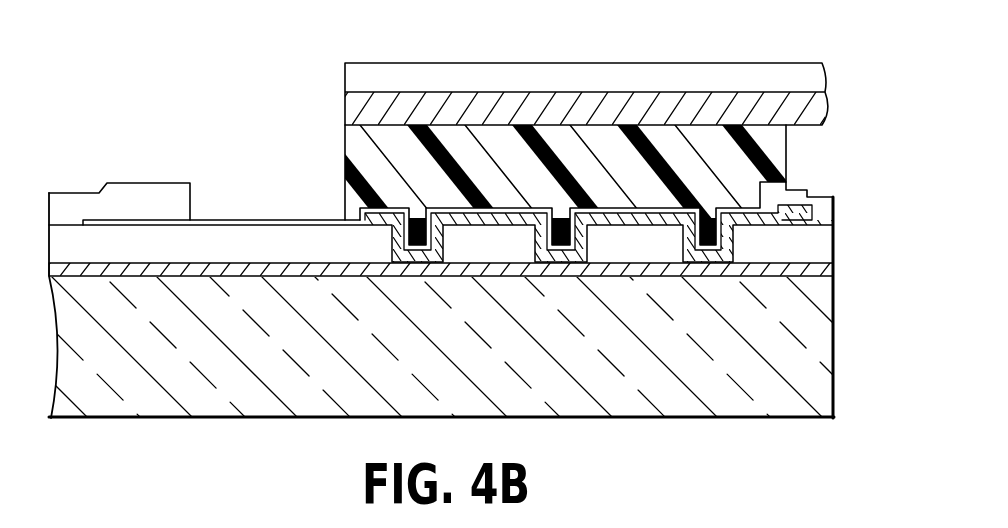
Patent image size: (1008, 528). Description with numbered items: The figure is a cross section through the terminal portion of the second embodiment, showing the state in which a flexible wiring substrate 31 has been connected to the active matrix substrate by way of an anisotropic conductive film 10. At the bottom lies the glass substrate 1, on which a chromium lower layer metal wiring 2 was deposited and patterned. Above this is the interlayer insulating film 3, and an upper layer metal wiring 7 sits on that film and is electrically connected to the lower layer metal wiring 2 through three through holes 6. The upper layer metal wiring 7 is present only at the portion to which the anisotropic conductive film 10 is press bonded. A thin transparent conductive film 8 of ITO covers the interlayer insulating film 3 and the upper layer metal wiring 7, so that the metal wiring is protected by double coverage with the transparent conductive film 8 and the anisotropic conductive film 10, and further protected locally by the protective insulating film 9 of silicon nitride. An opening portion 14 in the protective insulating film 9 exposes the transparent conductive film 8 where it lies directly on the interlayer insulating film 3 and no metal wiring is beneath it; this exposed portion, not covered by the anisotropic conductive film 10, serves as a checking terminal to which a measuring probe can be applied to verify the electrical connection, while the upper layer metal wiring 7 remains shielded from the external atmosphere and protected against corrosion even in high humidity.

The glass substrate 1 is at (727, 400).
The lower layer metal wiring 2 is at (837, 268).
The interlayer insulating film 3 is at (822, 243).
The through holes 6 is at (417, 230).
The upper layer metal wiring 7 is at (782, 205).
The transparent conductive film 8 is at (250, 208).
The protective insulating film 9 is at (145, 190).
The anisotropic conductive film 10 is at (375, 152).
The opening portion 14 is at (272, 187).
The flexible wiring substrate 31 is at (838, 62).